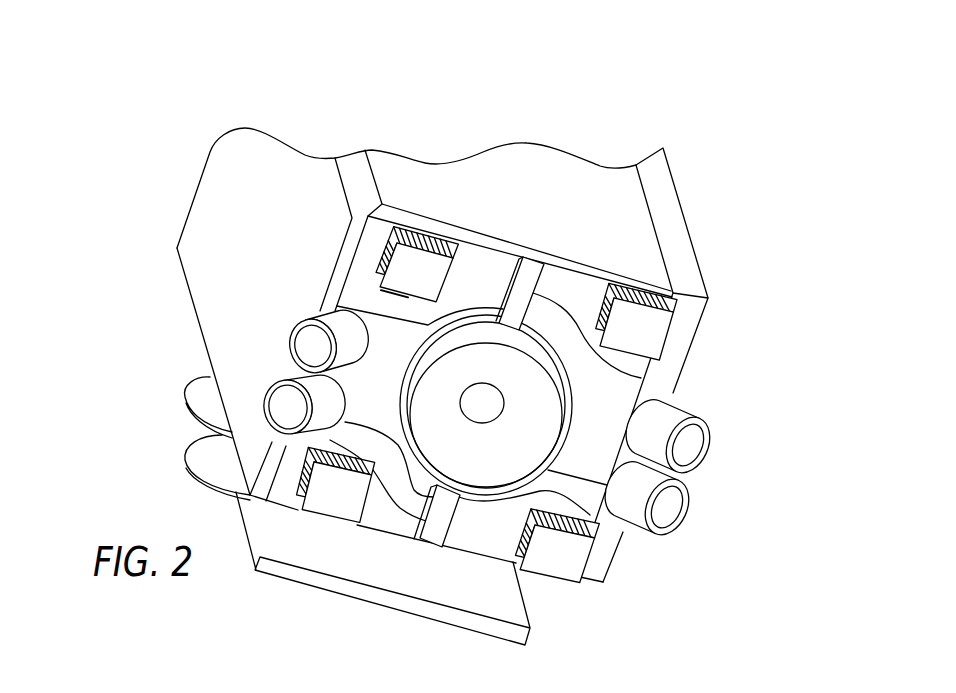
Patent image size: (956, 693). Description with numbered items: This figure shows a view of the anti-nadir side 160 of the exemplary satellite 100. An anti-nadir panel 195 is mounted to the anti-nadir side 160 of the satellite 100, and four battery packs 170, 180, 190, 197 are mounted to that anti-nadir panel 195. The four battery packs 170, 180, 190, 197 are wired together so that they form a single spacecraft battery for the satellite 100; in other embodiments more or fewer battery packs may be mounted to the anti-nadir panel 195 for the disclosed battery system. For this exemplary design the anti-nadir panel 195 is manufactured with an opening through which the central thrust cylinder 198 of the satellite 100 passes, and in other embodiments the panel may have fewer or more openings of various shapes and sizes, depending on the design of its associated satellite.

The satellite 100 is at (722, 217).
The anti-nadir side 160 is at (706, 475).
The battery pack 170 is at (403, 263).
The battery pack 180 is at (643, 342).
The battery pack 190 is at (570, 552).
The anti-nadir panel 195 is at (385, 450).
The battery pack 197 is at (327, 500).
The central thrust cylinder 198 is at (518, 438).